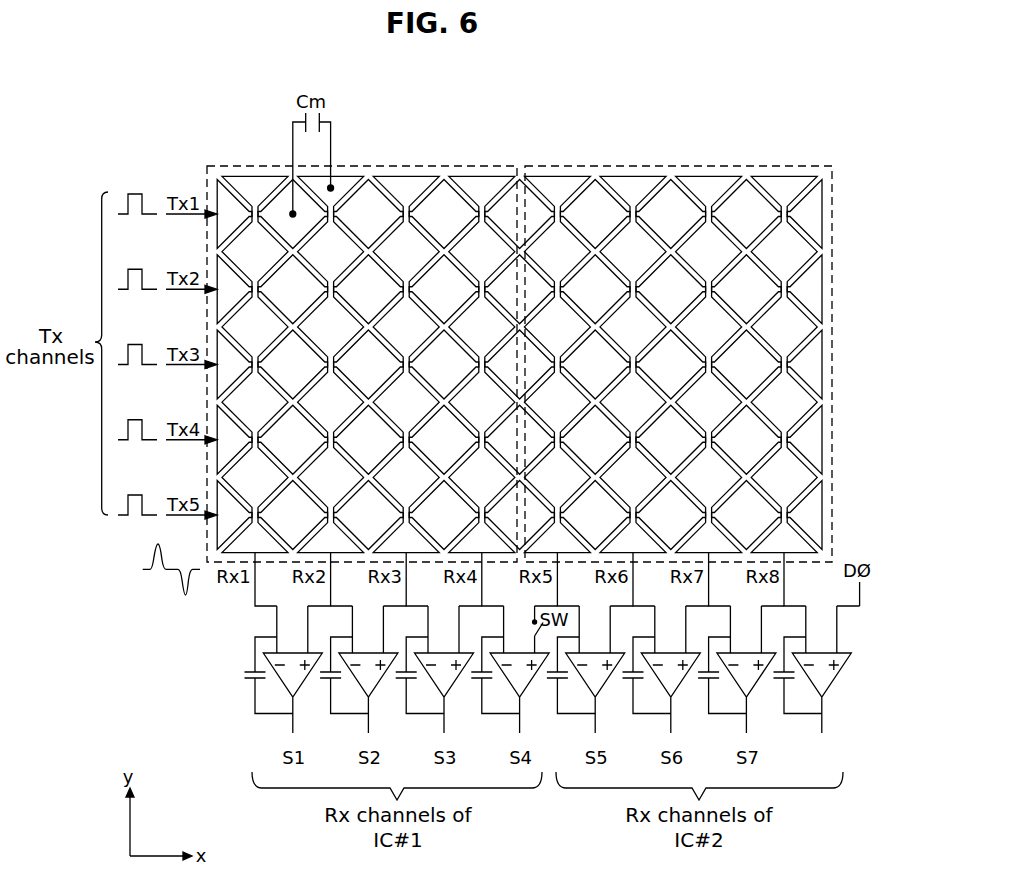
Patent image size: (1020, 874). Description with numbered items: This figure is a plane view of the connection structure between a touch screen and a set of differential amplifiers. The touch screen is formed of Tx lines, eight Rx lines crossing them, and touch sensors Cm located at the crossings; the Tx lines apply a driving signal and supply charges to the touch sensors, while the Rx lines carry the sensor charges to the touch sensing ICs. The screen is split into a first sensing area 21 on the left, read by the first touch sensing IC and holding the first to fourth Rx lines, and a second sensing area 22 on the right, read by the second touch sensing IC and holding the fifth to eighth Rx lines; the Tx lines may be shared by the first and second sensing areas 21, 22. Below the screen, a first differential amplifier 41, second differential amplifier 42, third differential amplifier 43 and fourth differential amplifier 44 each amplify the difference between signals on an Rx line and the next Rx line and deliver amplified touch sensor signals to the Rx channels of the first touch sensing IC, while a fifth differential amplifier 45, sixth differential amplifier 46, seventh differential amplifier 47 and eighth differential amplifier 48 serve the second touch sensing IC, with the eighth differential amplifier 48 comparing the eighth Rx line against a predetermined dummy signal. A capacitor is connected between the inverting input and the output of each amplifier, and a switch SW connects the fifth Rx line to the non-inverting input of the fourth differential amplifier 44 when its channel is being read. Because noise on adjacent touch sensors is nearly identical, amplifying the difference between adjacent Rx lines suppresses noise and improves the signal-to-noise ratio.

The first sensing area 21 is at (423, 166).
The second sensing area 22 is at (627, 166).
The first differential amplifier 41 is at (280, 673).
The second differential amplifier 42 is at (356, 673).
The third differential amplifier 43 is at (431, 673).
The fourth differential amplifier 44 is at (507, 673).
The fifth differential amplifier 45 is at (583, 673).
The sixth differential amplifier 46 is at (658, 673).
The seventh differential amplifier 47 is at (734, 673).
The eighth differential amplifier 48 is at (809, 673).